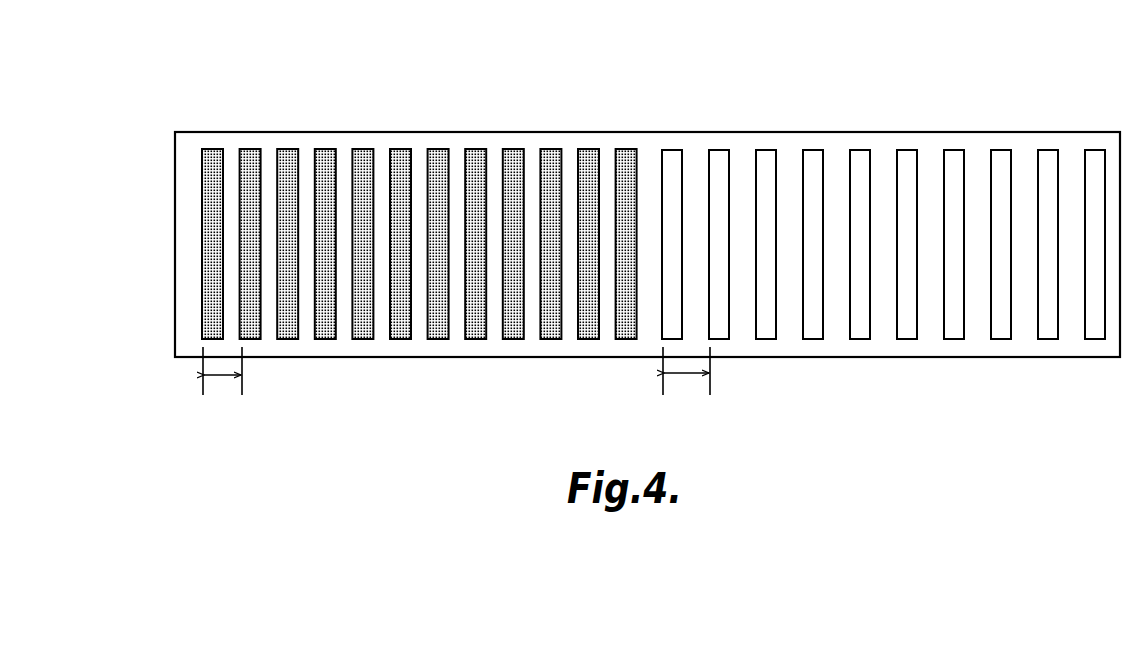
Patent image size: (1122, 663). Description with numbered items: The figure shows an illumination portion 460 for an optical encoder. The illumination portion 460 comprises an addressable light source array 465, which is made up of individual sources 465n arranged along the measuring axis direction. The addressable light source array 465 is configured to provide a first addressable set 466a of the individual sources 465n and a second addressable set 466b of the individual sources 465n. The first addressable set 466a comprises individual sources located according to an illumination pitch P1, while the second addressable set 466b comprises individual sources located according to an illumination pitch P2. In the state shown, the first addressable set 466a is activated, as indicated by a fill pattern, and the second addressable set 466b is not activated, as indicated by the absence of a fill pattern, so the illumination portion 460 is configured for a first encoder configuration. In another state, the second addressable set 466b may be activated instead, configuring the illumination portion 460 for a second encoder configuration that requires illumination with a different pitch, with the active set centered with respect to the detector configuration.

The illumination portion 460 is at (1008, 47).
The addressable light source array 465 is at (192, 261).
The individual sources 465n is at (195, 338).
The first addressable set 466a is at (645, 150).
The second addressable set 466b is at (1113, 150).
The illumination pitch P1 is at (222, 377).
The illumination pitch P2 is at (683, 375).